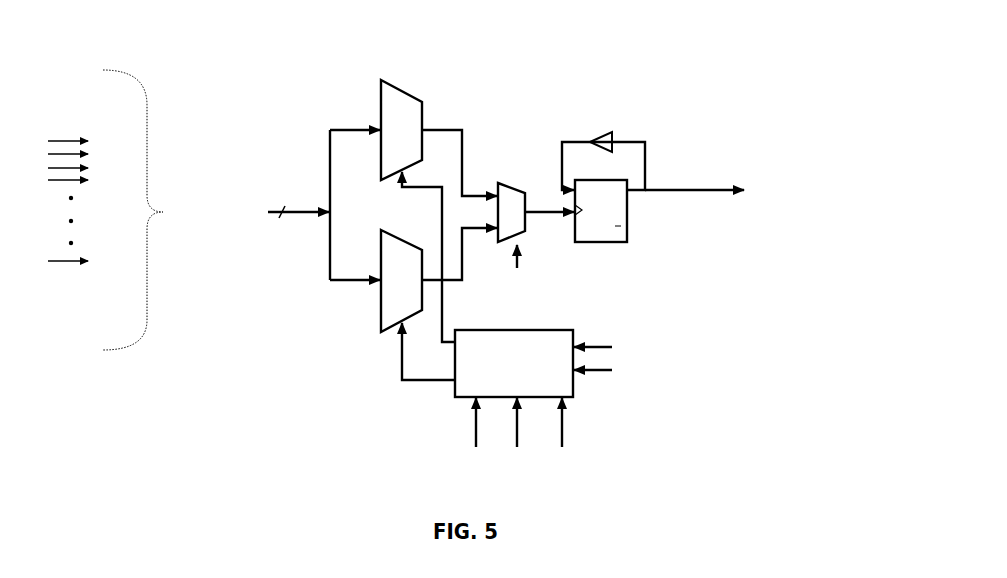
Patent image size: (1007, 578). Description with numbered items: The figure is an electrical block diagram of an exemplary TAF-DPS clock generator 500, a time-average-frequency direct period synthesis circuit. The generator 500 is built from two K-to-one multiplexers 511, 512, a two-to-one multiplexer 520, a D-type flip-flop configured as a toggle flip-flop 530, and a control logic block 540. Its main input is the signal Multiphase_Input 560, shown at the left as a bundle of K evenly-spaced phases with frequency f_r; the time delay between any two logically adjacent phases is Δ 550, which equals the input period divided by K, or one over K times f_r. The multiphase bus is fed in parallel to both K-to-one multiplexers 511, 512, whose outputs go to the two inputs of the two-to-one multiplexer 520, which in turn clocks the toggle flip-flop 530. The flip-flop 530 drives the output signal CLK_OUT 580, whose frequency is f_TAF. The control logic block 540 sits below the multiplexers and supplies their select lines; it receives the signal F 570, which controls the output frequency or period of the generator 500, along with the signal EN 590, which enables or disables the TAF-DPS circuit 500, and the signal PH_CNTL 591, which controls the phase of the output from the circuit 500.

The TAF-DPS clock generator 500 is at (578, 26).
The K→1 multiplexer 511 is at (470, 94).
The K→1 multiplexer 512 is at (370, 300).
The 2→1 multiplexer 520 is at (548, 164).
The toggle flip-flop 530 is at (655, 261).
The control logic block 540 is at (600, 312).
The time delay Δ 550 is at (100, 113).
The Multiphase_Input 560 is at (213, 180).
The signal F 570 is at (460, 452).
The CLK_OUT 580 is at (813, 208).
The signal EN 590 is at (518, 471).
The signal PH_CNTL 591 is at (567, 470).